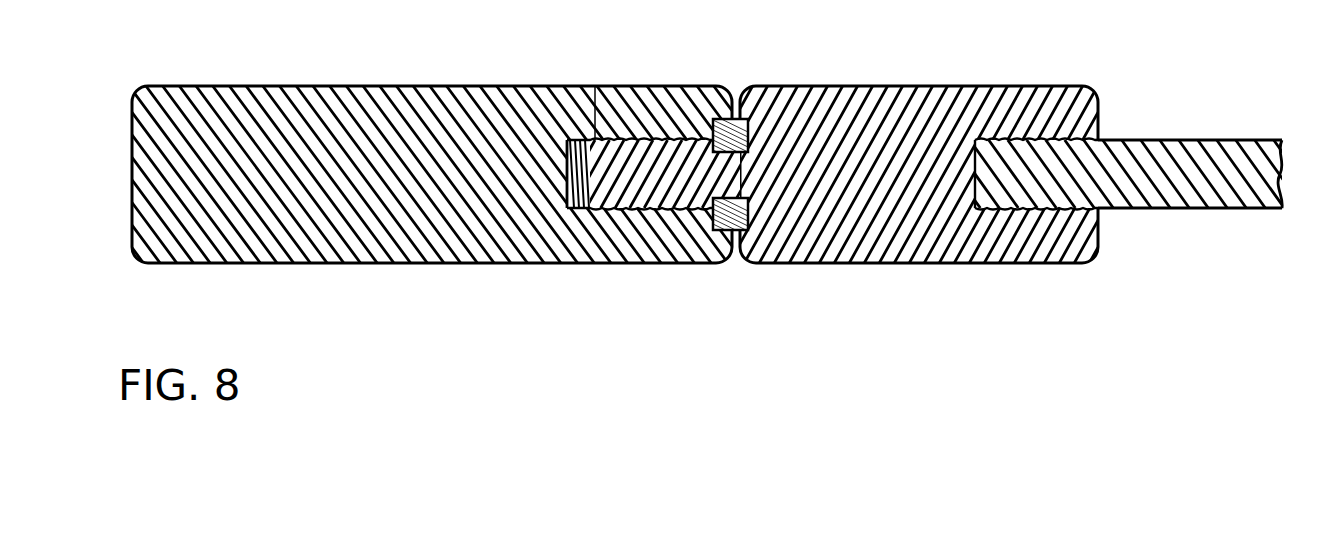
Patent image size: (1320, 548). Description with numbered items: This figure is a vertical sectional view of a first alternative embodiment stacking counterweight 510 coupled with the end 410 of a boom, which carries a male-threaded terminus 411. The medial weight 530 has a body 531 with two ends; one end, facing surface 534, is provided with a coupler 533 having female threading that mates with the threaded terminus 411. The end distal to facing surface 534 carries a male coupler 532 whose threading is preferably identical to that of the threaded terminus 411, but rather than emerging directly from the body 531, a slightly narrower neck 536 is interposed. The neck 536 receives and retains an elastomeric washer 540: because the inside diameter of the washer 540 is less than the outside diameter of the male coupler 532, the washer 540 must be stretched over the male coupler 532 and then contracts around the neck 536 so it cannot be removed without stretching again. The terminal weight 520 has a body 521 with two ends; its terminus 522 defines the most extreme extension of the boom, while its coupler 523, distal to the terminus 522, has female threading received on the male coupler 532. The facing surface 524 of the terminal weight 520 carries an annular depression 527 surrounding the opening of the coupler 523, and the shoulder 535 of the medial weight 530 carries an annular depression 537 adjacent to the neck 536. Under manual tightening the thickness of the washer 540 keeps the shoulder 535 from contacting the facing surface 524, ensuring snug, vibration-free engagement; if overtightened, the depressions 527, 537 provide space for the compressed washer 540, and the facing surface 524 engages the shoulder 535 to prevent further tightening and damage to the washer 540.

The end of boom 410 is at (1188, 196).
The threaded terminus 411 is at (1069, 171).
The stacking counterweight 510 is at (403, 297).
The terminal weight 520 is at (254, 271).
The body of terminal weight 521 is at (344, 100).
The terminus 522 is at (132, 121).
The coupler of terminal weight 523 is at (577, 208).
The facing surface 524 is at (728, 232).
The annular depression 527 is at (713, 122).
The medial weight 530 is at (973, 270).
The body of medial weight 531 is at (1029, 100).
The male coupler 532 is at (597, 86).
The coupler of medial weight 533 is at (1043, 208).
The facing surface of medial weight 534 is at (1097, 232).
The shoulder 535 is at (757, 244).
The neck 536 is at (750, 160).
The annular depression 537 is at (748, 140).
The elastomeric washer 540 is at (752, 225).